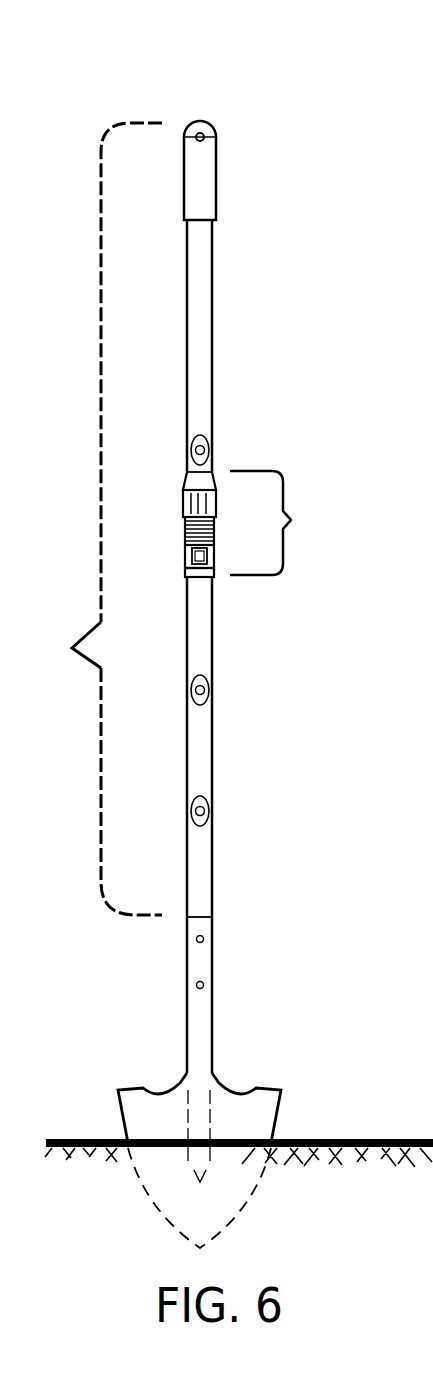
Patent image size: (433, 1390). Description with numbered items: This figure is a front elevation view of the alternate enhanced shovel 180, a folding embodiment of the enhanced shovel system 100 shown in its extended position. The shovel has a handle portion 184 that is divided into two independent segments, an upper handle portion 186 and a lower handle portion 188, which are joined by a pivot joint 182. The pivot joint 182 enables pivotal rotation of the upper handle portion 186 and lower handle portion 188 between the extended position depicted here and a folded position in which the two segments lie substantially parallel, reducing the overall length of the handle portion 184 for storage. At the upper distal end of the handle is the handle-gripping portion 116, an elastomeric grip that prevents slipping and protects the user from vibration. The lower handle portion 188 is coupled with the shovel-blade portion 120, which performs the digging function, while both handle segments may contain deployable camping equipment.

The enhanced shovel system 100 is at (185, 110).
The handle-gripping portion 116 is at (206, 185).
The shovel-blade portion 120 is at (268, 1087).
The alternate enhanced shovel 180 is at (247, 373).
The pivot joint 182 is at (296, 520).
The handle portion 184 is at (88, 634).
The upper handle portion 186 is at (233, 300).
The lower handle portion 188 is at (225, 755).